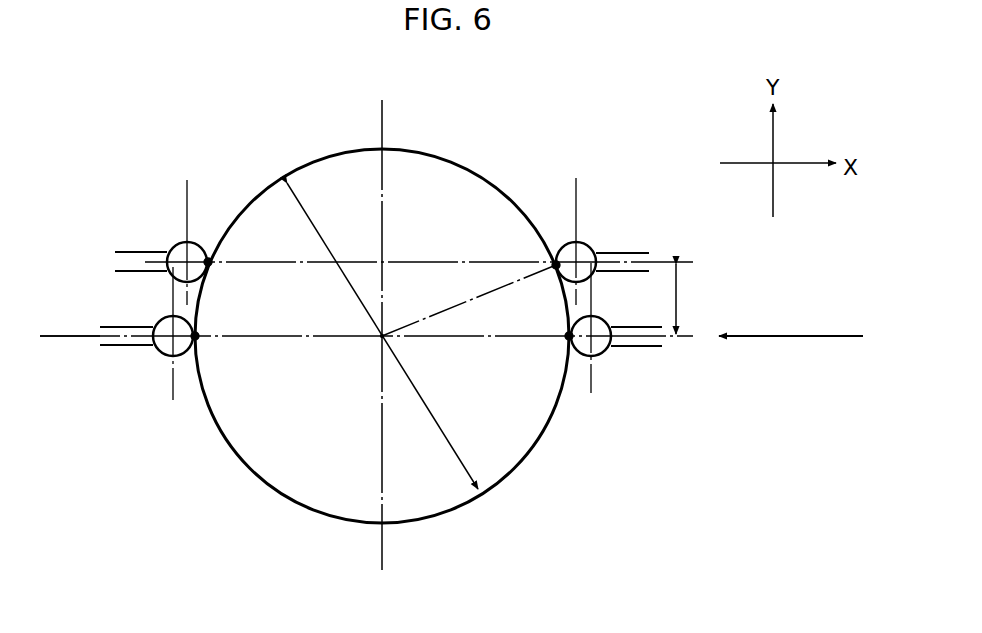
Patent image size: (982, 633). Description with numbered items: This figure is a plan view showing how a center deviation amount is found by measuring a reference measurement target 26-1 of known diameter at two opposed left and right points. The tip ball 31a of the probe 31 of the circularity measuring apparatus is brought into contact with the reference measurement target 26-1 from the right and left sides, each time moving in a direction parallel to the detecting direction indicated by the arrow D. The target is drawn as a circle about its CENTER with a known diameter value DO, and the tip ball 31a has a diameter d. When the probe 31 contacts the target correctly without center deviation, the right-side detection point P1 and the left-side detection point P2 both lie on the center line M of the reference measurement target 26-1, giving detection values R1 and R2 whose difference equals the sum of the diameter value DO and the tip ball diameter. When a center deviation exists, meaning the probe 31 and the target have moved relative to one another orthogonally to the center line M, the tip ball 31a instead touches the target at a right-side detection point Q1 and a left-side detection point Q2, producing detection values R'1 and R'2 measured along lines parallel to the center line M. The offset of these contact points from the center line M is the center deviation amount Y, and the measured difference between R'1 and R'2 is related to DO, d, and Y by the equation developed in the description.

The reference measurement target 26-1 is at (298, 510).
The probe 31 is at (130, 248).
The tip ball 31a is at (188, 241).
The center line M is at (70, 342).
The detecting direction D is at (796, 335).
The center CENTER is at (381, 338).
The diameter value DO is at (382, 336).
The right-side detection point Q1 is at (554, 266).
The left-side detection point Q2 is at (210, 262).
The right-side detection point P1 is at (569, 338).
The left-side detection point P2 is at (195, 338).
The detection value R1 is at (594, 349).
The detection value R2 is at (175, 352).
The detection value R'1 is at (579, 230).
The detection value R'2 is at (189, 230).
The center deviation amount Y is at (686, 299).